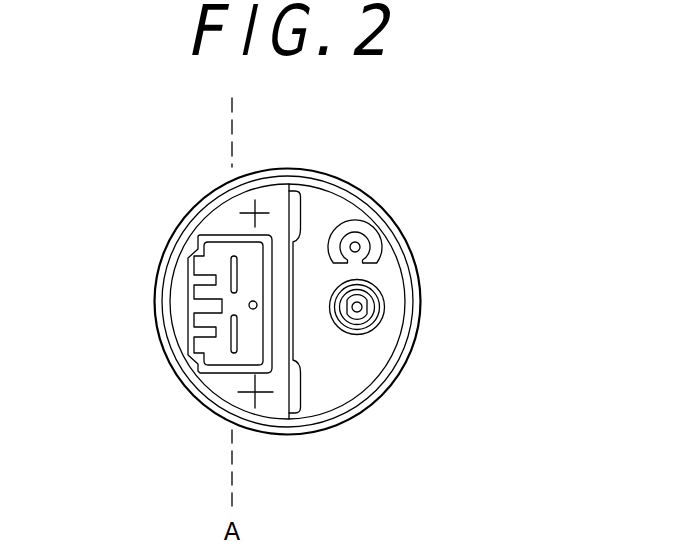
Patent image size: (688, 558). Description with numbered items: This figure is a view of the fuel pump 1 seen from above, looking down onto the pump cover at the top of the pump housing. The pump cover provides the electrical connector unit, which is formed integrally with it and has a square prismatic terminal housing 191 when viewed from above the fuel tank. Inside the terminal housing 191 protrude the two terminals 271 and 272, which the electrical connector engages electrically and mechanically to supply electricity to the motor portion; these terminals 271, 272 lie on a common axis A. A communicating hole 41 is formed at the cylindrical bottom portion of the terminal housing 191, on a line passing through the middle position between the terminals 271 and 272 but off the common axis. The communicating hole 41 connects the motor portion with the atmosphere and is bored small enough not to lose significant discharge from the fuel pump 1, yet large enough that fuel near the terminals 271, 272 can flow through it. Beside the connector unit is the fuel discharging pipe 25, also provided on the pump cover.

The fuel pump 1 is at (395, 213).
The terminal housing 191 is at (230, 268).
The fuel discharging pipe 25 is at (344, 308).
The communicating hole 41 is at (249, 305).
The terminal 271 is at (231, 350).
The terminal 272 is at (197, 235).